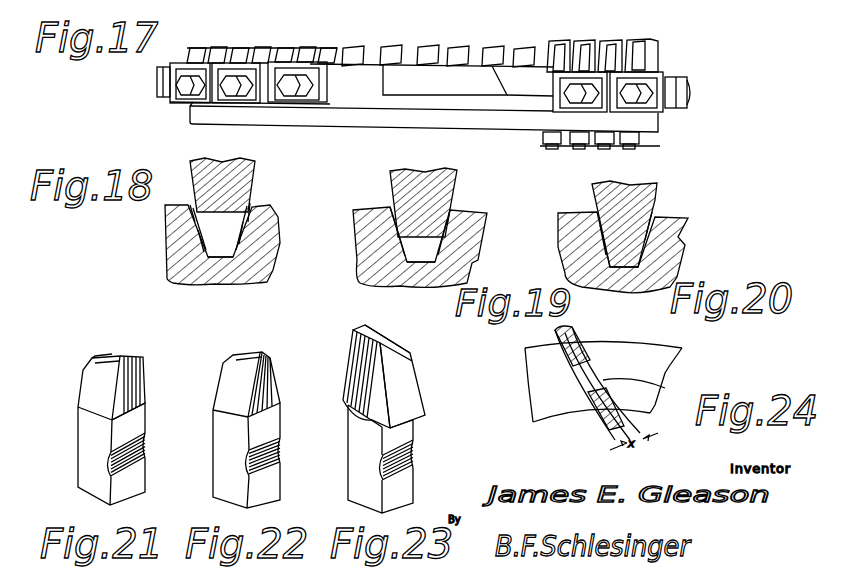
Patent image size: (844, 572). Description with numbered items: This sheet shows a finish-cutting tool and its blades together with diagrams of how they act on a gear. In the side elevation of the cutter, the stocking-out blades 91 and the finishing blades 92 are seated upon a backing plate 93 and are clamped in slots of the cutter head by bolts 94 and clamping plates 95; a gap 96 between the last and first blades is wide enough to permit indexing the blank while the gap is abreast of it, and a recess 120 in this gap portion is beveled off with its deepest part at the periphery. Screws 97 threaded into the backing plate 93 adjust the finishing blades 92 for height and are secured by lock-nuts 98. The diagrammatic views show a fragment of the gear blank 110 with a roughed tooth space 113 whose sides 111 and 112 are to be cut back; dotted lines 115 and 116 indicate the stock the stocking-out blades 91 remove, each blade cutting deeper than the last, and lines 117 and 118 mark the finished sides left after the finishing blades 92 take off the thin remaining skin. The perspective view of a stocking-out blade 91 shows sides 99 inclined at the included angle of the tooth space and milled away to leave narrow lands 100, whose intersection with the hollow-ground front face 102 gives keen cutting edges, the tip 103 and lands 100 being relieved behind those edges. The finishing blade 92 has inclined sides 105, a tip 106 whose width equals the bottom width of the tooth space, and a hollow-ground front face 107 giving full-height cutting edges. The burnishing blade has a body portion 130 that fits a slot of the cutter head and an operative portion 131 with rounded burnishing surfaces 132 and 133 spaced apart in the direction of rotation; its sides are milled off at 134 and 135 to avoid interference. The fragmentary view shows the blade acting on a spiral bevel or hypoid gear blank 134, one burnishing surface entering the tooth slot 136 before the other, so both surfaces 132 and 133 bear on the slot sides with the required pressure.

In FIG. 17, the stocking-out blade 91 is at (429, 46).
In FIG. 18, the stocking-out blade 91 is at (252, 200).
In FIG. 19, the stocking-out blade 91 is at (450, 186).
In FIG. 21, the stocking-out blade 91 is at (138, 418).
In FIG. 17, the finishing blade 92 is at (611, 40).
In FIG. 20, the finishing blade 92 is at (658, 191).
In FIG. 22, the finishing blade 92 is at (272, 417).
In FIG. 17, the backing plate 93 is at (381, 117).
In FIG. 17, the bolt 94 is at (273, 100).
In FIG. 17, the clamping plate 95 is at (205, 107).
In FIG. 17, the gap 96 is at (523, 103).
In FIG. 17, the screw 97 is at (631, 149).
In FIG. 17, the lock-nut 98 is at (643, 141).
In FIG. 17, the recess 120 is at (460, 87).
In FIG. 21, the side of cutting portion 99 is at (100, 386).
In FIG. 21, the cutting land 100 is at (122, 357).
In FIG. 21, the front face 102 is at (137, 390).
In FIG. 21, the tip 103 is at (110, 356).
In FIG. 22, the side of projecting part 105 is at (235, 388).
In FIG. 22, the tip 106 is at (262, 353).
In FIG. 22, the front face 107 is at (265, 378).
In FIG. 18, the gear blank 110 is at (274, 244).
In FIG. 19, the gear blank 110 is at (372, 274).
In FIG. 20, the gear blank 110 is at (674, 250).
In FIG. 18, the side of tooth space 111 is at (200, 238).
In FIG. 18, the side of tooth space 112 is at (250, 232).
In FIG. 18, the tooth space 113 is at (262, 262).
In FIG. 19, the tooth space 113 is at (470, 265).
In FIG. 18, the dotted line 115 is at (196, 223).
In FIG. 19, the dotted line 115 is at (393, 221).
In FIG. 18, the dotted line 116 is at (256, 207).
In FIG. 19, the dotted line 116 is at (466, 213).
In FIG. 18, the finished side of tooth space 117 is at (210, 256).
In FIG. 19, the finished side of tooth space 117 is at (403, 250).
In FIG. 20, the finished side of tooth space 117 is at (596, 238).
In FIG. 18, the finished side of tooth space 118 is at (266, 218).
In FIG. 19, the finished side of tooth space 118 is at (460, 228).
In FIG. 20, the finished side of tooth space 118 is at (652, 228).
In FIG. 23, the body portion 130 is at (362, 472).
In FIG. 23, the operative portion 131 is at (408, 380).
In FIG. 23, the burnishing surface 132 is at (360, 358).
In FIG. 24, the burnishing surface 132 is at (556, 334).
In FIG. 23, the burnishing surface 133 is at (408, 349).
In FIG. 24, the burnishing surface 133 is at (590, 352).
In FIG. 23, the gear blank 134 is at (386, 408).
In FIG. 24, the gear blank 134 is at (672, 368).
In FIG. 23, the milled-off side 135 is at (376, 331).
In FIG. 24, the tooth slot 136 is at (660, 383).